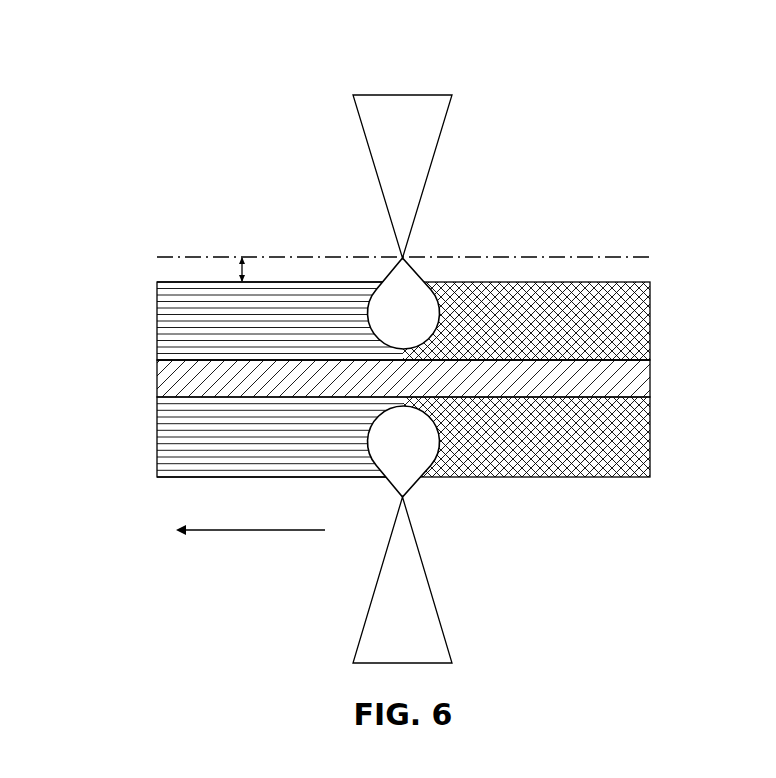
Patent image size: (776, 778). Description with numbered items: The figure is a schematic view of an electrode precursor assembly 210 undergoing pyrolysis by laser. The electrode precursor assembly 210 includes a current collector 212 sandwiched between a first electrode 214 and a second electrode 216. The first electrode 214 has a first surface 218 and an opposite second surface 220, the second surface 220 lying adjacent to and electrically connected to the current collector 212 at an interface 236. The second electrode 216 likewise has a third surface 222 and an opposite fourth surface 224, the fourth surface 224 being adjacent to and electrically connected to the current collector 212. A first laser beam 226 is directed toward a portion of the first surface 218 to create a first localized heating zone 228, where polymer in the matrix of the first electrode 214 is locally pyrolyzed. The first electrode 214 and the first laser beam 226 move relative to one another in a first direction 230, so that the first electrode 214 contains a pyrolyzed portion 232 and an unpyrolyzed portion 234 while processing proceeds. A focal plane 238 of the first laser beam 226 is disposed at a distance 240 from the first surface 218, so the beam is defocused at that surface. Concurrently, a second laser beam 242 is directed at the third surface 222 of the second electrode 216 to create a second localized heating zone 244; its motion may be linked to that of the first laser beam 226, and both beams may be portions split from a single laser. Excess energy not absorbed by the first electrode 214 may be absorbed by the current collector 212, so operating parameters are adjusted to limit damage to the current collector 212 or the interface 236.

The electrode precursor assembly 210 is at (124, 216).
The current collector 212 is at (157, 362).
The first electrode 214 is at (178, 322).
The second electrode 216 is at (172, 448).
The first surface 218 is at (583, 280).
The second surface 220 is at (172, 380).
The third surface 222 is at (178, 478).
The fourth surface 224 is at (597, 387).
The first laser beam 226 is at (410, 153).
The first localized heating zone 228 is at (403, 298).
The first direction 230 is at (230, 531).
The pyrolyzed portion 232 is at (641, 307).
The unpyrolyzed portion 234 is at (165, 295).
The interface 236 is at (150, 360).
The focal plane 238 is at (283, 255).
The distance 240 is at (240, 269).
The second laser beam 242 is at (413, 580).
The second localized heating zone 244 is at (413, 460).